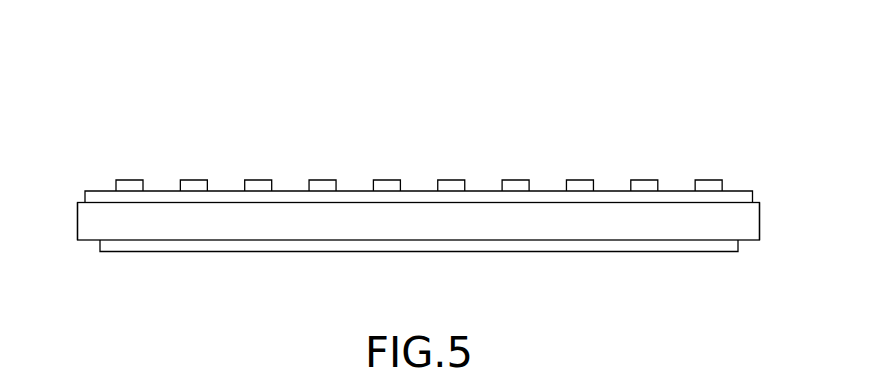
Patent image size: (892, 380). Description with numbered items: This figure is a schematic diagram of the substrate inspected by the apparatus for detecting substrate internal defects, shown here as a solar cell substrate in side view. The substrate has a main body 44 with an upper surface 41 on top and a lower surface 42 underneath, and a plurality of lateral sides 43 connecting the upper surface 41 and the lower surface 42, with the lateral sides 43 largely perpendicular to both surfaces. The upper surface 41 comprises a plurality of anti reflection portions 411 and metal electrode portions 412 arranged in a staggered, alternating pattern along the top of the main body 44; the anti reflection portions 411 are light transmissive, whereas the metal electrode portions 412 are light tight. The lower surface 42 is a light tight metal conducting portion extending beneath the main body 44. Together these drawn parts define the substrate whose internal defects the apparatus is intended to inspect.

The upper surface 41 is at (708, 88).
The anti reflection portion 411 is at (678, 195).
The metal electrode portion 412 is at (645, 188).
The lower surface 42 is at (605, 252).
The lateral sides 43 is at (78, 221).
The main body 44 is at (301, 223).